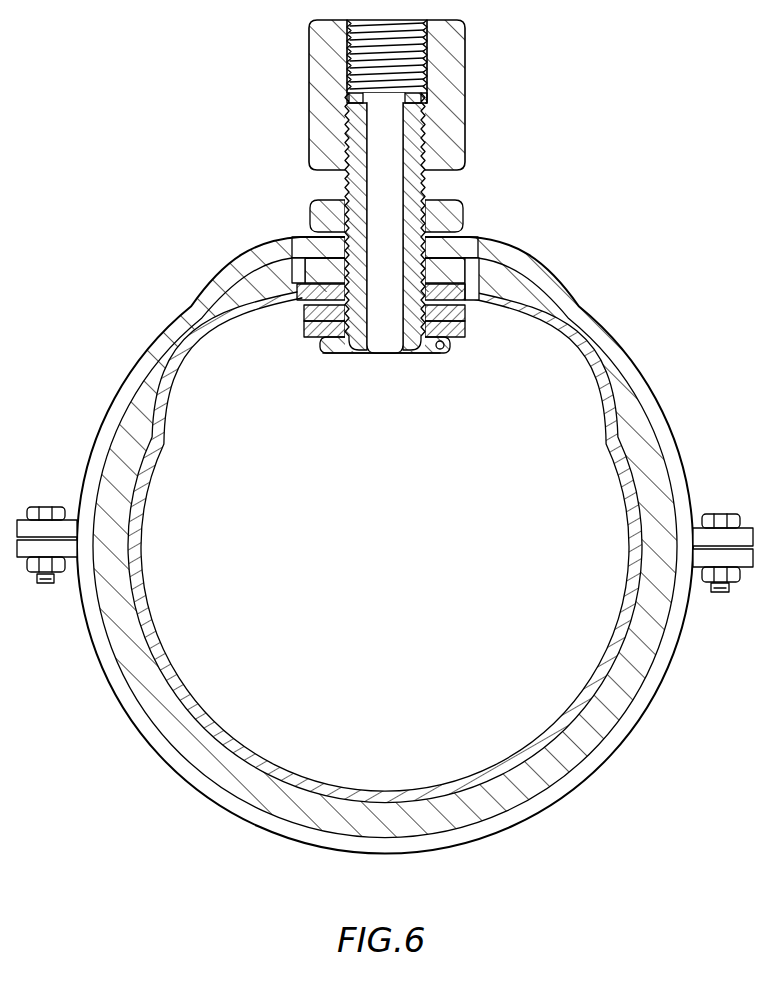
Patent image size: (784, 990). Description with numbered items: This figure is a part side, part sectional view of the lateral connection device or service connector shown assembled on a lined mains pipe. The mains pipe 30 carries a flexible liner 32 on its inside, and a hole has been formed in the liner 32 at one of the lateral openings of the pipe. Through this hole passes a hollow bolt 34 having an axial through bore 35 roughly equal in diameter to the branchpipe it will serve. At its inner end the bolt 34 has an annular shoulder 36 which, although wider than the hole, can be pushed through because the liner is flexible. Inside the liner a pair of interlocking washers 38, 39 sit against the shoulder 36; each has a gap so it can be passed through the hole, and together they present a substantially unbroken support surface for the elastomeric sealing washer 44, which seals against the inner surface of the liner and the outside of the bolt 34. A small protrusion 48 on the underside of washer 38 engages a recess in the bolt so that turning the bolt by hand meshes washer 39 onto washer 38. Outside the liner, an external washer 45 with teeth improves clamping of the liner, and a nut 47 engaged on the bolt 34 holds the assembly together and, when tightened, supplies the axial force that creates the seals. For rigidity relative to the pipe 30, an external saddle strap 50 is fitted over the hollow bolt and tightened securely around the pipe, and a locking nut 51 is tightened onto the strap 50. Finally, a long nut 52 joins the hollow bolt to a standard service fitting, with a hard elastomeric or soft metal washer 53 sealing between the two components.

The mains pipe 30 is at (535, 775).
The liner 32 is at (556, 735).
The hollow bolt 34 is at (430, 183).
The axial through bore 35 is at (381, 313).
The annular shoulder 36 is at (450, 345).
The interlocking washer 38 is at (465, 333).
The interlocking washer 39 is at (465, 313).
The elastomeric sealing washer 44 is at (470, 298).
The external washer 45 is at (477, 284).
The nut 47 is at (447, 265).
The protrusion 48 is at (440, 352).
The external saddle strap 50 is at (662, 406).
The locking nut 51 is at (447, 217).
The long nut 52 is at (463, 105).
The washer 53 is at (400, 92).